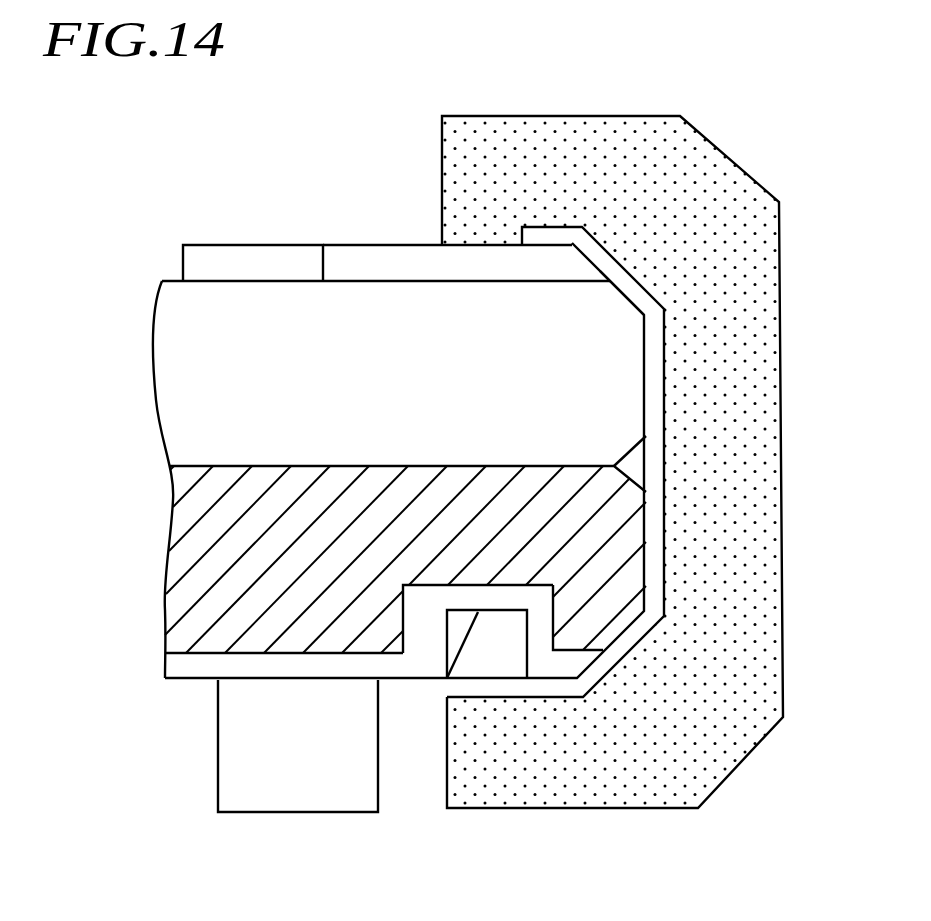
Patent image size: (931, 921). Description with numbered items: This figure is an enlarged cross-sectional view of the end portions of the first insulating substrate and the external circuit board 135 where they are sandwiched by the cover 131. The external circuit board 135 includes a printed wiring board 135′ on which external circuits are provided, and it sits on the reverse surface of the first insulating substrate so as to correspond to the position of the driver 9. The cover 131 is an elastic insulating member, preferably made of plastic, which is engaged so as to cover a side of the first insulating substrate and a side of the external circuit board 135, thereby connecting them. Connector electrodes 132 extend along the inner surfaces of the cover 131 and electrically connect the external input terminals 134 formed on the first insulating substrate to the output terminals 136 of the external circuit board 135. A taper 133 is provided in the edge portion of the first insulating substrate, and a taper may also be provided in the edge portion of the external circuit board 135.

The driver 9 is at (262, 255).
The cover 131 is at (725, 732).
The connector electrodes 132 is at (565, 228).
The taper 133 is at (632, 300).
The external input terminals 134 is at (393, 255).
The external circuit board 135 is at (172, 616).
The printed wiring board 135′ is at (195, 668).
The output terminals 136 is at (558, 667).